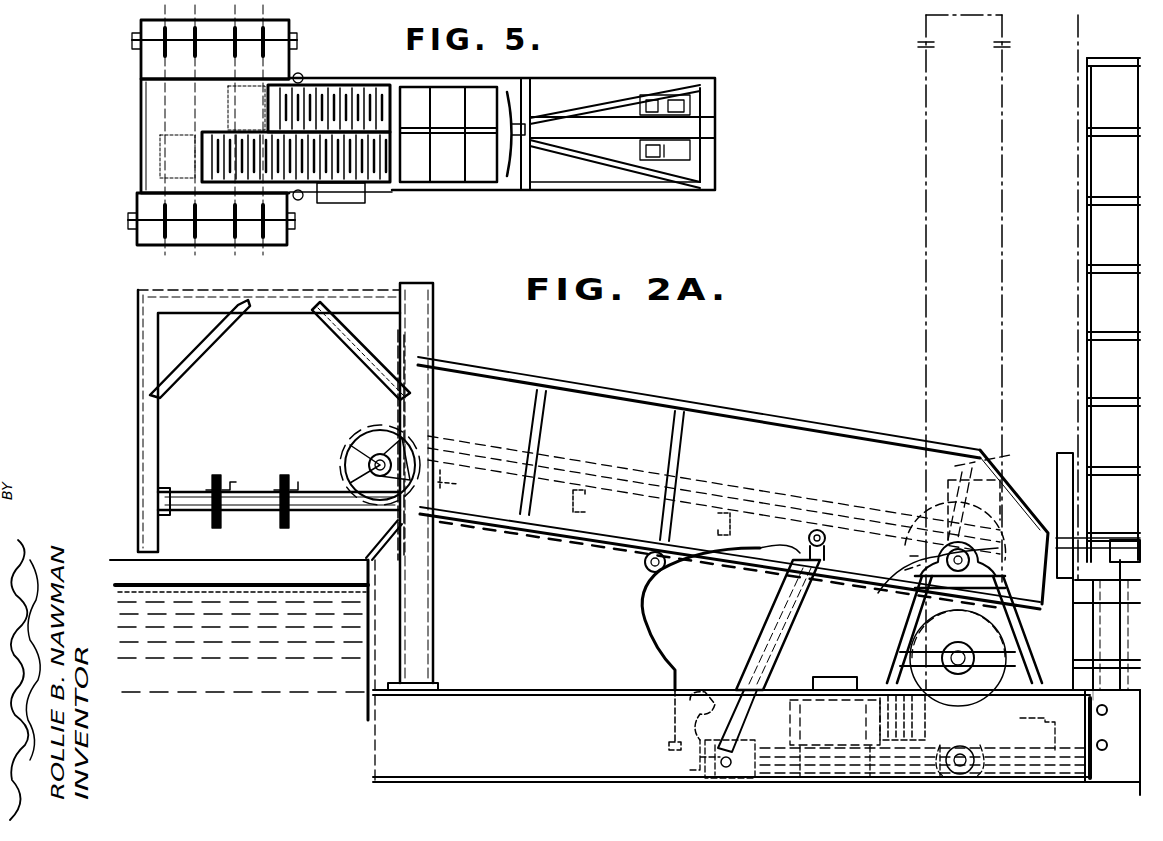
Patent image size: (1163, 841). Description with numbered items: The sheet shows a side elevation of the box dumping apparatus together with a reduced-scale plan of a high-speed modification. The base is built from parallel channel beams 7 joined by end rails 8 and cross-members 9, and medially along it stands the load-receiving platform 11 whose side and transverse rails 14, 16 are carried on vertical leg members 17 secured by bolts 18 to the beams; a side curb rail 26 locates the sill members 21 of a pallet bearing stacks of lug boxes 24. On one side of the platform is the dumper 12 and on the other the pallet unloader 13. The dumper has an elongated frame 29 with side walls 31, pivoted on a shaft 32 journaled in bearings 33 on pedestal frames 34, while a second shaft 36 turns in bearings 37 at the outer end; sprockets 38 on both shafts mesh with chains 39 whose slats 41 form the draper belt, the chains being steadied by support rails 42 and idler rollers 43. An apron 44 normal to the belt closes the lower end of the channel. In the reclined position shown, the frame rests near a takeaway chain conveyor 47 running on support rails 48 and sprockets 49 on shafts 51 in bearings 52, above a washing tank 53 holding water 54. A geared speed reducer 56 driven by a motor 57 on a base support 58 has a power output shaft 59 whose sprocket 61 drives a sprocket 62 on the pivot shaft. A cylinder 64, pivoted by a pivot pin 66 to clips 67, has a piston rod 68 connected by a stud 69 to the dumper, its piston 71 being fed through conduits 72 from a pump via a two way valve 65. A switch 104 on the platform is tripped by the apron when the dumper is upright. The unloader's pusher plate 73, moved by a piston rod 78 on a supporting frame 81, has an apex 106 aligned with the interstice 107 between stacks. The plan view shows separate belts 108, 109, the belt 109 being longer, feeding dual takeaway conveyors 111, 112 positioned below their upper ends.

In FIG. 5, the channel beams 7 is at (585, 187).
In FIG. 2A, the channel beams 7 is at (620, 741).
In FIG. 5, the end rails 8 is at (704, 108).
In FIG. 2A, the end rails 8 is at (392, 744).
In FIG. 2A, the cross-members 9 is at (1030, 733).
In FIG. 5, the load-receiving platform 11 is at (452, 186).
In FIG. 5, the dumper 12 is at (458, 141).
In FIG. 2A, the dumper 12 is at (733, 474).
In FIG. 5, the pallet unloader 13 is at (620, 75).
In FIG. 2A, the side rails 14 is at (1118, 600).
In FIG. 2A, the transverse rails 16 is at (1070, 600).
In FIG. 2A, the vertical leg members 17 is at (1108, 622).
In FIG. 2A, the bolts 18 is at (1107, 712).
In FIG. 2A, the sill members 21 is at (1104, 571).
In FIG. 5, the lug boxes 24 is at (447, 96).
In FIG. 2A, the lug boxes 24 is at (1090, 105).
In FIG. 2A, the side curb rail 26 is at (1078, 560).
In FIG. 5, the elongated frame 29 is at (626, 137).
In FIG. 2A, the elongated frame 29 is at (612, 540).
In FIG. 2A, the side walls 31 is at (600, 412).
In FIG. 2A, the shaft 32 is at (958, 550).
In FIG. 2A, the bearings 33 is at (880, 592).
In FIG. 2A, the pedestal frames 34 is at (900, 660).
In FIG. 2A, the shaft 36 is at (366, 465).
In FIG. 2A, the bearings 37 is at (352, 452).
In FIG. 2A, the sprockets 38 is at (908, 556).
In FIG. 2A, the chains 39 is at (712, 500).
In FIG. 2A, the slats 41 is at (716, 480).
In FIG. 2A, the support rails 42 is at (600, 480).
In FIG. 2A, the idler rollers 43 is at (646, 568).
In FIG. 2A, the apron 44 is at (940, 468).
In FIG. 2A, the takeaway chain conveyor 47 is at (238, 497).
In FIG. 2A, the support rails 48 is at (212, 488).
In FIG. 2A, the sprockets 49 is at (222, 520).
In FIG. 2A, the shafts 51 is at (312, 508).
In FIG. 2A, the bearings 52 is at (378, 525).
In FIG. 2A, the washing tank 53 is at (239, 615).
In FIG. 2A, the water 54 is at (280, 586).
In FIG. 2A, the geared speed reducer 56 is at (935, 622).
In FIG. 2A, the motor 57 is at (835, 678).
In FIG. 2A, the base support 58 is at (798, 778).
In FIG. 2A, the power output shaft 59 is at (930, 658).
In FIG. 2A, the sprocket 61 is at (938, 698).
In FIG. 2A, the sprocket 62 is at (946, 522).
In FIG. 2A, the cylinder 64 is at (765, 640).
In FIG. 2A, the solenoid-operated two way valve 65 is at (940, 778).
In FIG. 2A, the pivot pin 66 is at (732, 780).
In FIG. 2A, the clips 67 is at (690, 770).
In FIG. 2A, the piston rod 68 is at (780, 595).
In FIG. 2A, the stud 69 is at (808, 538).
In FIG. 2A, the piston 71 is at (735, 700).
In FIG. 2A, the conduits 72 is at (640, 620).
In FIG. 5, the pusher plate 73 is at (516, 129).
In FIG. 5, the piston rod 78 is at (530, 142).
In FIG. 5, the supporting frame 81 is at (590, 152).
In FIG. 2A, the switch 104 is at (1080, 542).
In FIG. 5, the apex 106 is at (506, 125).
In FIG. 5, the interstice 107 is at (456, 134).
In FIG. 5, the belt 108 is at (348, 108).
In FIG. 5, the belt 109 is at (318, 186).
In FIG. 5, the takeaway conveyor 111 is at (178, 67).
In FIG. 5, the takeaway conveyor 112 is at (244, 205).